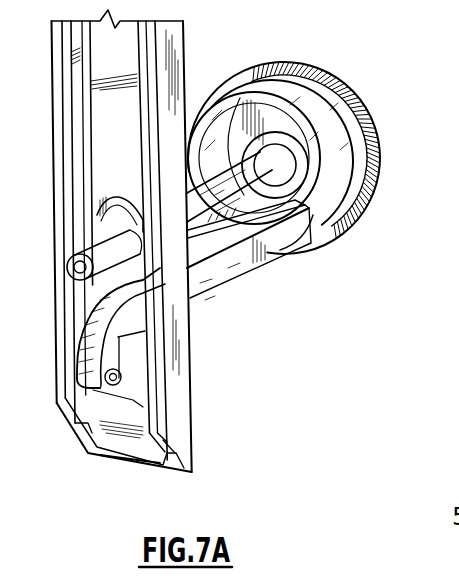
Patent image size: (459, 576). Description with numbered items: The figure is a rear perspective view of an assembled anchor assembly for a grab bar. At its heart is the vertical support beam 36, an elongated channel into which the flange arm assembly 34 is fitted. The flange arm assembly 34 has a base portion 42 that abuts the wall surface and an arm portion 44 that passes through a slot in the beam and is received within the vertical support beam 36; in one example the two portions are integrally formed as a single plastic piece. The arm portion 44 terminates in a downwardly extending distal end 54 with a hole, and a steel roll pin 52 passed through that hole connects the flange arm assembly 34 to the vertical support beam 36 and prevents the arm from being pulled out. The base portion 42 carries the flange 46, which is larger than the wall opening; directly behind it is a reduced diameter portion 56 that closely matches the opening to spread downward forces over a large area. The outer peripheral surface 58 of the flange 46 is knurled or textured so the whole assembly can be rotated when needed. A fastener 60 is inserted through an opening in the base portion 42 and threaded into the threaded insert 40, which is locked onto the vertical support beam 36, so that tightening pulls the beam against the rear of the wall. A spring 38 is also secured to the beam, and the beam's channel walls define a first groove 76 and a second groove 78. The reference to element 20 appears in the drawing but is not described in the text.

The frame 20 is at (448, 433).
The flange arm assembly 34 is at (256, 284).
The vertical support beam 36 is at (136, 151).
The spring 38 is at (173, 420).
The threaded insert 40 is at (110, 223).
The base portion 42 is at (268, 95).
The arm portion 44 is at (198, 283).
The flange 46 is at (353, 231).
The steel roll pin 52 is at (134, 394).
The downwardly extending distal end 54 is at (88, 385).
The reduced diameter portion 56 is at (330, 209).
The outer peripheral surface 58 is at (381, 190).
The fastener 60 is at (238, 200).
The first groove 76 is at (103, 456).
The second groove 78 is at (167, 460).